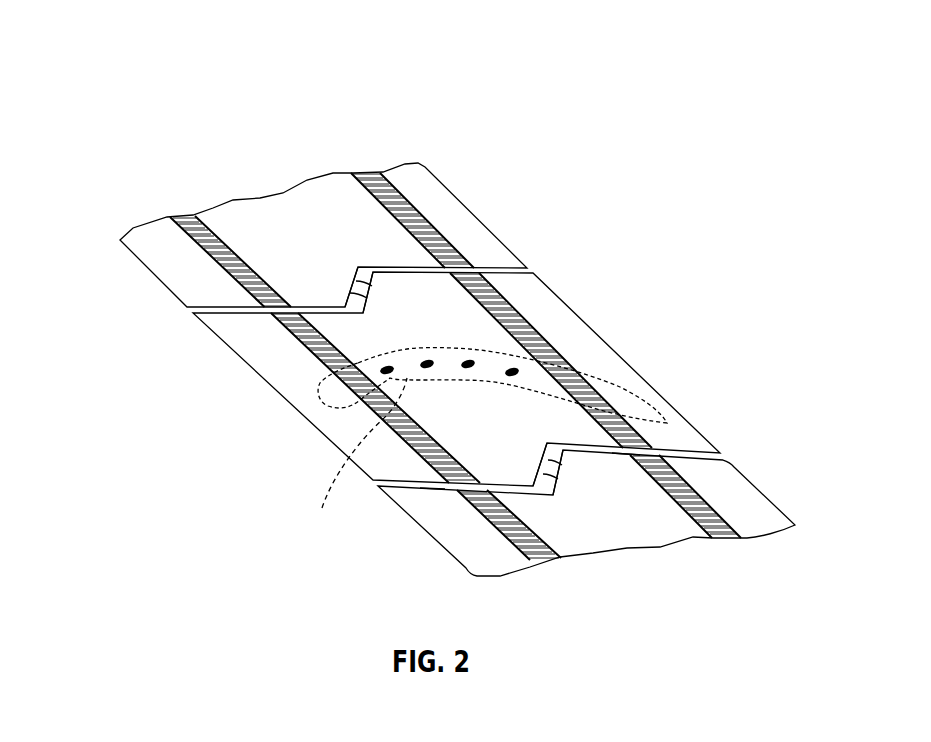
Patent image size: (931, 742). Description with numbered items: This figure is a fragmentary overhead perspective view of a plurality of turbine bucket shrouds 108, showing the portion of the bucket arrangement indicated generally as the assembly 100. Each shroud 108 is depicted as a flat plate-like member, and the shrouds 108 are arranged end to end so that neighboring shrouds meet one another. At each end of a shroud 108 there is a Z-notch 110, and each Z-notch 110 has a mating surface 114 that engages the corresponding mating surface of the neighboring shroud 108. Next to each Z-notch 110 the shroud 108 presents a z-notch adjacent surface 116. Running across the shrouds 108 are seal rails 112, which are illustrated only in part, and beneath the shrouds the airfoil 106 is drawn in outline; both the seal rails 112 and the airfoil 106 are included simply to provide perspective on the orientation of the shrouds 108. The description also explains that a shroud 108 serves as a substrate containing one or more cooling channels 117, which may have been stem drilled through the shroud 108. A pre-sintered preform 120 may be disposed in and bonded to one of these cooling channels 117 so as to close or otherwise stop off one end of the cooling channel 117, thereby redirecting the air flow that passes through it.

The heater assembly 100 is at (141, 114).
The airfoil 106 is at (355, 461).
The turbine bucket shroud 108 is at (463, 214).
The Z-notch 110 is at (350, 293).
The seal rail 112 is at (188, 217).
The mating surface 114 is at (355, 267).
The z-notch adjacent surface 116 is at (432, 487).
The cooling channel 117 is at (378, 368).
The pre-sintered preform 120 is at (480, 357).